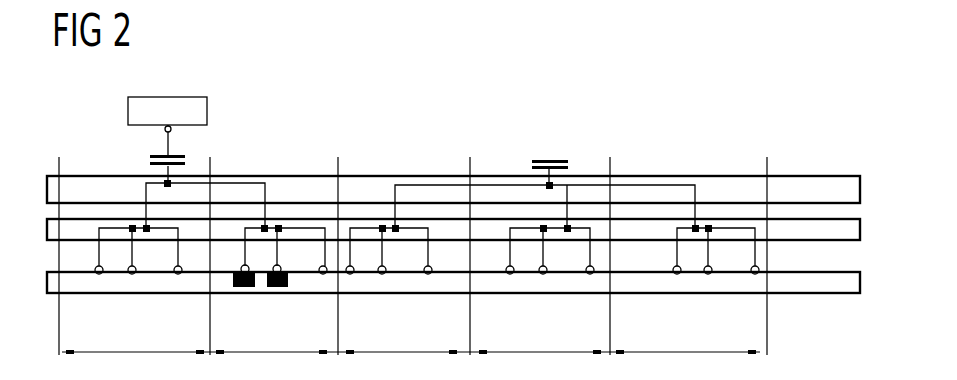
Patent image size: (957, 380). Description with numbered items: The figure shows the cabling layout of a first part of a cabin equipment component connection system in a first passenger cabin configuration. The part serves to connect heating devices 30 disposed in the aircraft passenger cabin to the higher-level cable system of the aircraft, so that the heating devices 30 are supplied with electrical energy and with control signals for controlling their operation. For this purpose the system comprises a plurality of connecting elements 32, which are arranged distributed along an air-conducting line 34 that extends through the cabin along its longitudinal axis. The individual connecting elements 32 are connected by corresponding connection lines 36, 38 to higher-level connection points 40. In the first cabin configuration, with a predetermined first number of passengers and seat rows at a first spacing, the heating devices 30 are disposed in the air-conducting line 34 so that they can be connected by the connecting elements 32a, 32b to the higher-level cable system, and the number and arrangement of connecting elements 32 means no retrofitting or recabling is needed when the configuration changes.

The heating device 30 is at (273, 235).
The connecting element 32 is at (101, 274).
The connecting element 32a is at (241, 269).
The connecting element 32b is at (281, 269).
The air-conducting line 34 is at (802, 286).
The connection line 36 is at (773, 252).
The connection line 38 is at (702, 190).
The higher-level connection point 40 is at (150, 157).